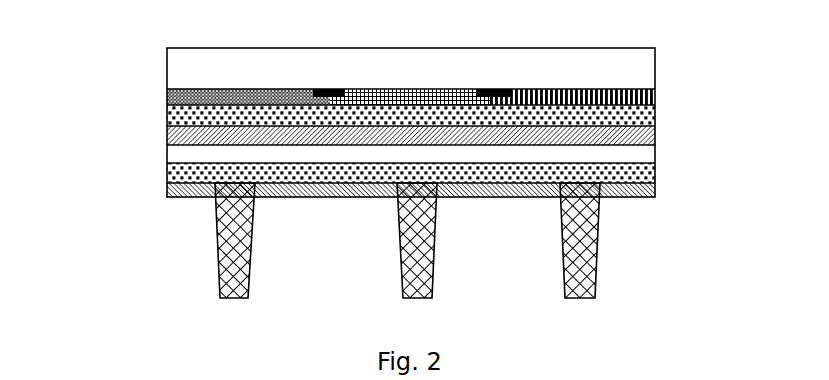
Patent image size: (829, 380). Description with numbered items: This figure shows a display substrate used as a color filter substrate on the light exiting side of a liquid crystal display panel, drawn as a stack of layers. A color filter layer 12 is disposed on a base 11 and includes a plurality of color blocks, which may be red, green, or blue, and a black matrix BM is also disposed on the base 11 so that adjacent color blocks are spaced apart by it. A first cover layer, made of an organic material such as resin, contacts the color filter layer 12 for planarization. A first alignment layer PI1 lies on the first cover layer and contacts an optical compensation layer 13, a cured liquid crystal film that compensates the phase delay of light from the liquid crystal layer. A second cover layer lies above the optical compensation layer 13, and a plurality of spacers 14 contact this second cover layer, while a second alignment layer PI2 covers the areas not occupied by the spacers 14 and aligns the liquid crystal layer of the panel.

The base 11 is at (167, 58).
The color filter layer 12 is at (160, 95).
The black matrix BM is at (331, 89).
The first alignment layer PI1 is at (167, 136).
The optical compensation layer 13 is at (652, 152).
The second alignment layer PI2 is at (197, 198).
The spacers 14 is at (230, 265).